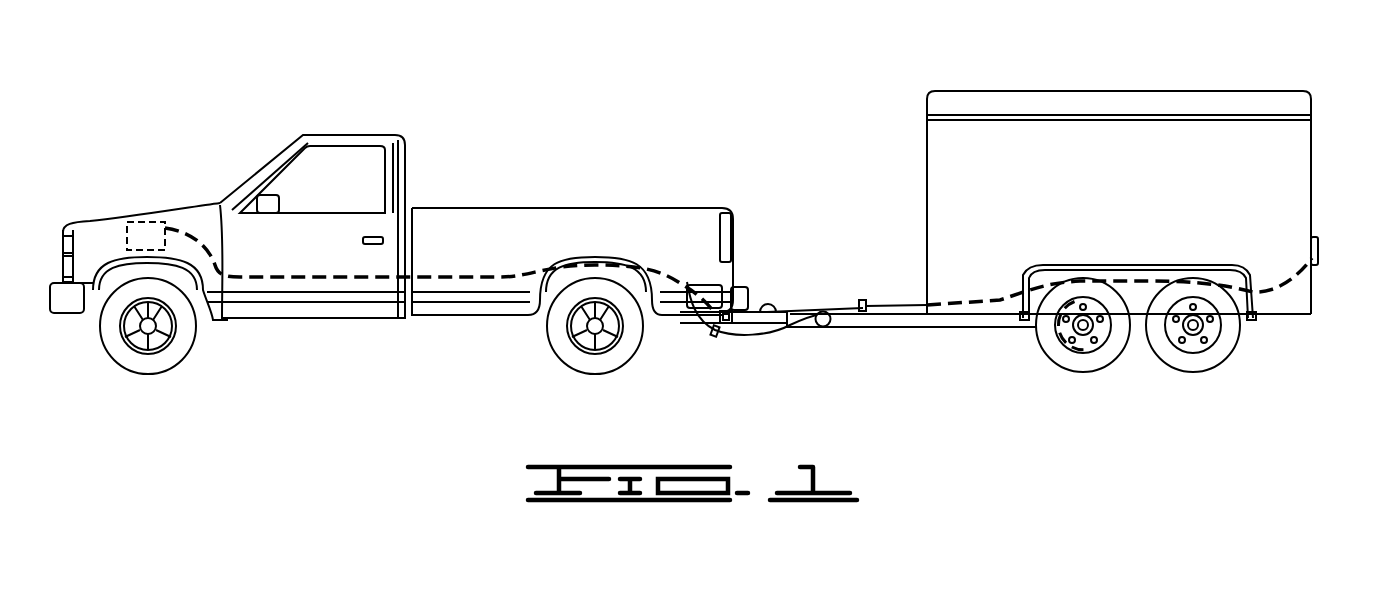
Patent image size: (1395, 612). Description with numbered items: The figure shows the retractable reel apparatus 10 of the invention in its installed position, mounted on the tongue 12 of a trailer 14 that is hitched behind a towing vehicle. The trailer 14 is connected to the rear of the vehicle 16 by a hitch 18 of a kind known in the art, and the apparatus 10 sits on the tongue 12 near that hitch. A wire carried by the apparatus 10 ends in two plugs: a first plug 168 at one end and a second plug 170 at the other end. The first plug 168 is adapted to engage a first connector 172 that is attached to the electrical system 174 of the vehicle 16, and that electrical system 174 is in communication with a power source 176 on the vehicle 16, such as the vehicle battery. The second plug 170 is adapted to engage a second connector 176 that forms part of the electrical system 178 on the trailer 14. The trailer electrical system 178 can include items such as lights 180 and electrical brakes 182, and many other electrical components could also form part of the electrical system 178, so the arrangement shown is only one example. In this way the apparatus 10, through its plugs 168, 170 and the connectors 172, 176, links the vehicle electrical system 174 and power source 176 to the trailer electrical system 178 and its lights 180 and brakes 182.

The retractable reel apparatus 10 is at (823, 327).
The tongue 12 is at (905, 328).
The trailer 14 is at (1133, 106).
The vehicle 16 is at (333, 133).
The hitch 18 is at (768, 303).
The first plug 168 is at (718, 337).
The second plug 170 is at (835, 284).
The first connector 172 is at (714, 335).
The electrical system 174 is at (320, 285).
The power source / second connector 176 is at (147, 221).
The electrical system 178 is at (987, 300).
The lights 180 is at (1316, 237).
The electrical brakes 182 is at (1092, 350).